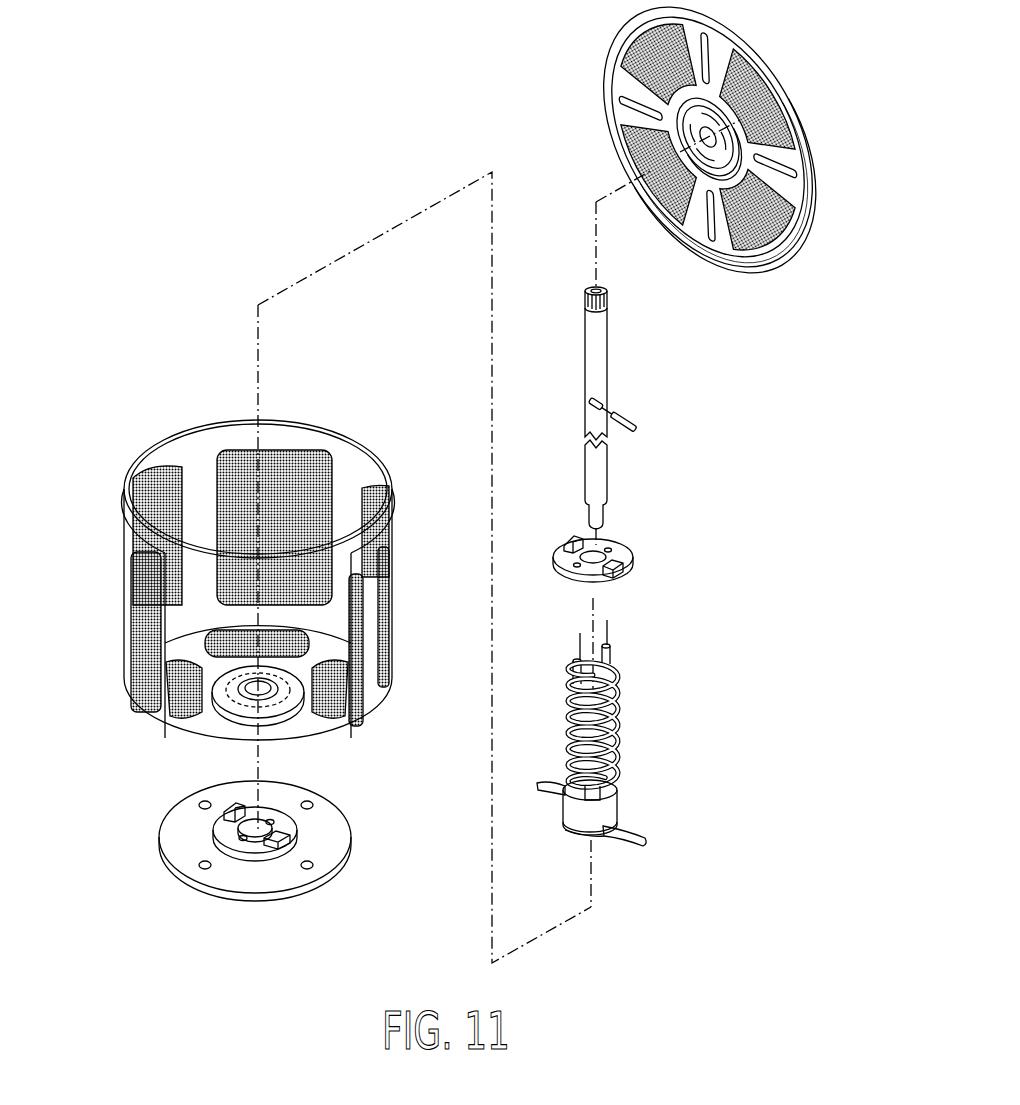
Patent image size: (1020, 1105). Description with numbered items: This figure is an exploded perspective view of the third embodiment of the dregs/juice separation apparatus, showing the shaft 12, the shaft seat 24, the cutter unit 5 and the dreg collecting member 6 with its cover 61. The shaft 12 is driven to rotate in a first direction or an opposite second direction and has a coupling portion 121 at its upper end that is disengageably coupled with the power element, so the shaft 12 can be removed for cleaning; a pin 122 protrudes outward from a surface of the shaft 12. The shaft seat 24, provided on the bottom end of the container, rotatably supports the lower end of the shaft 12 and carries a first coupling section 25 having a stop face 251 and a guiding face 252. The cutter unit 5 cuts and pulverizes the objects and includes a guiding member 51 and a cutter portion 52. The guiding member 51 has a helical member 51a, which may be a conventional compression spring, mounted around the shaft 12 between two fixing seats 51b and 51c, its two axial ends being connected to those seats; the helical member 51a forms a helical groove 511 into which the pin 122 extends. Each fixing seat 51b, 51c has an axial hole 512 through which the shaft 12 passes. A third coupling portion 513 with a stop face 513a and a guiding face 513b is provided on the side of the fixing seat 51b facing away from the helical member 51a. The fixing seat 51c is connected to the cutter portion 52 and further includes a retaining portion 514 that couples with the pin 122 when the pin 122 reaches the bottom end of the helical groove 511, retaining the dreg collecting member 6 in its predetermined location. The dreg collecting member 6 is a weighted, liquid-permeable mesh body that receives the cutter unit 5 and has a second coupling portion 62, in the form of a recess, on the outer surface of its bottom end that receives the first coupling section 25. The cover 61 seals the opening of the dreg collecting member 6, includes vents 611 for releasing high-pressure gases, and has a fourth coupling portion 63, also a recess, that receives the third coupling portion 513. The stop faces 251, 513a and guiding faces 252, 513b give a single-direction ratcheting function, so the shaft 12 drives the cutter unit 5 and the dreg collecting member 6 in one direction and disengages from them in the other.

The cutter unit 5 is at (662, 857).
The dreg collecting member 6 is at (177, 435).
The shaft 12 is at (600, 363).
The shaft seat 24 is at (323, 858).
The first coupling section 25 is at (275, 843).
The guiding member 51 is at (778, 552).
The helical member 51a is at (612, 716).
The fixing seat 51b is at (625, 548).
The fixing seat 51c is at (618, 808).
The cutter portion 52 is at (632, 835).
The cover 61 is at (745, 42).
The second coupling portion 62 is at (245, 705).
The fourth coupling portion 63 is at (725, 138).
The coupling portion 121 is at (606, 298).
The pin 122 is at (640, 424).
The stop face 251 is at (258, 843).
The guiding face 252 is at (292, 828).
The helical groove 511 is at (568, 745).
The axial hole 512 is at (565, 567).
The third coupling portion 513 is at (605, 572).
The stop face 513a is at (602, 582).
The guiding face 513b is at (622, 562).
The retaining portion 514 is at (600, 838).
The vent 611 is at (765, 120).